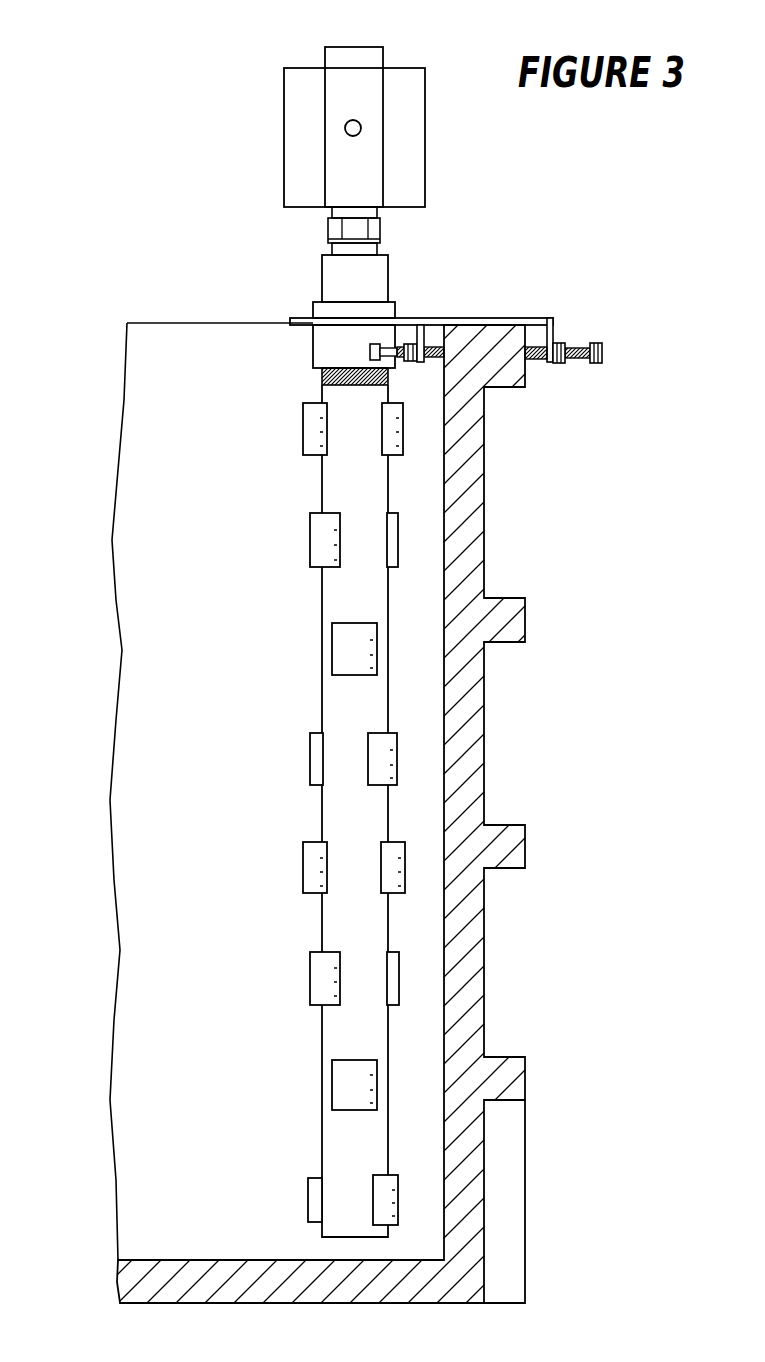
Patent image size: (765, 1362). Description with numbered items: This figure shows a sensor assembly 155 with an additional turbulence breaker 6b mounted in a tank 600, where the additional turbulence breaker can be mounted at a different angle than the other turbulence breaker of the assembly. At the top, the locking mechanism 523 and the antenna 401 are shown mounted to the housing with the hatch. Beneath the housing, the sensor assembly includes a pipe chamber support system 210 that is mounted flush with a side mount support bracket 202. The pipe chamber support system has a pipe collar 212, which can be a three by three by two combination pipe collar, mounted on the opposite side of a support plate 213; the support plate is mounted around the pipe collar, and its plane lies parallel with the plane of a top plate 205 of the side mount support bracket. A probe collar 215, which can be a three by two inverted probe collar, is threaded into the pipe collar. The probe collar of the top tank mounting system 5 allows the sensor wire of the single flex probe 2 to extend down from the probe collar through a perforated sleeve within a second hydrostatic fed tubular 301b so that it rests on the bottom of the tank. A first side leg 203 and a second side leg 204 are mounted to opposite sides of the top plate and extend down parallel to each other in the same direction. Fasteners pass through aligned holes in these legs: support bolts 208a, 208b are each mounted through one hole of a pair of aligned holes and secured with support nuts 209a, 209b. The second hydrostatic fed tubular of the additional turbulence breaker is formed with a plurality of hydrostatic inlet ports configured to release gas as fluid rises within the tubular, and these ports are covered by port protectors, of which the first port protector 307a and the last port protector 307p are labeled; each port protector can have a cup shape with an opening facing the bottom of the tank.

The sensor assembly 155 is at (77, 97).
The antenna 401 is at (345, 126).
The locking mechanism 523 is at (387, 96).
The single flex probe 2 is at (328, 232).
The probe collar 215 is at (322, 280).
The support plate 213 is at (313, 310).
The pipe collar 212 is at (313, 345).
The pipe chamber support system 210 is at (432, 254).
The top plate 205 is at (498, 318).
The second side leg 204 is at (405, 318).
The side mount support bracket 202 is at (570, 289).
The first side leg 203 is at (556, 330).
The support bolt 208a is at (370, 350).
The support bolt 208b is at (602, 350).
The support nut 209a is at (409, 361).
The support nut 209b is at (559, 363).
The top tank mounting system 5 is at (552, 230).
The additional turbulence breaker 6b is at (257, 409).
The tank 600 is at (527, 618).
The second hydrostatic fed tubular 301b is at (322, 592).
The port protector 307a is at (303, 430).
The port protector 307p is at (310, 1195).